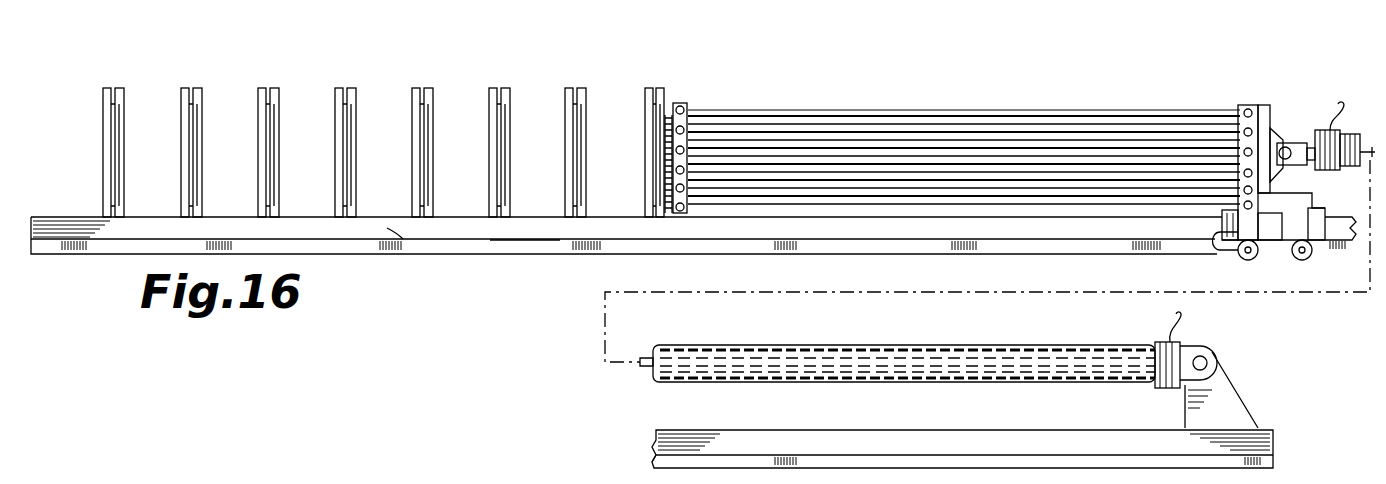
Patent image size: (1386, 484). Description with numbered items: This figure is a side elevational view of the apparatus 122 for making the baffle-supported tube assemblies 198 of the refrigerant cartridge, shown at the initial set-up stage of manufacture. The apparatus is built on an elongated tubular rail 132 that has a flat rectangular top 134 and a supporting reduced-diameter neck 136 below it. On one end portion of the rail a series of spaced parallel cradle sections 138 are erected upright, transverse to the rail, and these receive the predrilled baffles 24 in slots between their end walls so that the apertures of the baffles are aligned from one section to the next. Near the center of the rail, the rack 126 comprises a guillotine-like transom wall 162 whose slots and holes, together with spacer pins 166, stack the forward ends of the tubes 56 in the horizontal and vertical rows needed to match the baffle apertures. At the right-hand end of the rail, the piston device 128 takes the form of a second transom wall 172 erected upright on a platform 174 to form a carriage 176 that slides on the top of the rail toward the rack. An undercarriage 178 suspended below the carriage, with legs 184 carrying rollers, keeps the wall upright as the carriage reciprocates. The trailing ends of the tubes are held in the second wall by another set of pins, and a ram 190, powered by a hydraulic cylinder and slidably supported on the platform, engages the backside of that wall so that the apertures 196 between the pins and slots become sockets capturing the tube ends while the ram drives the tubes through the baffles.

The baffles 24 is at (398, 88).
The tubes 56 is at (961, 108).
The apparatus 122 is at (791, 75).
The rack 126 is at (675, 84).
The piston device 128 is at (1265, 96).
The tubular rail 132 is at (538, 210).
The top of rail 134 is at (392, 228).
The neck 136 is at (497, 240).
The cradle sections 138 is at (549, 483).
The transom wall 162 is at (687, 104).
The spacer pins 166 is at (689, 207).
The second transom wall 172 is at (1242, 150).
The platform 174 is at (1292, 192).
The carriage 176 is at (1275, 226).
The undercarriage 178 is at (1327, 262).
The legs 184 is at (1222, 250).
The ram 190 is at (1290, 96).
The apertures 196 is at (612, 483).
The baffle-supported tube assemblies 198 is at (380, 483).